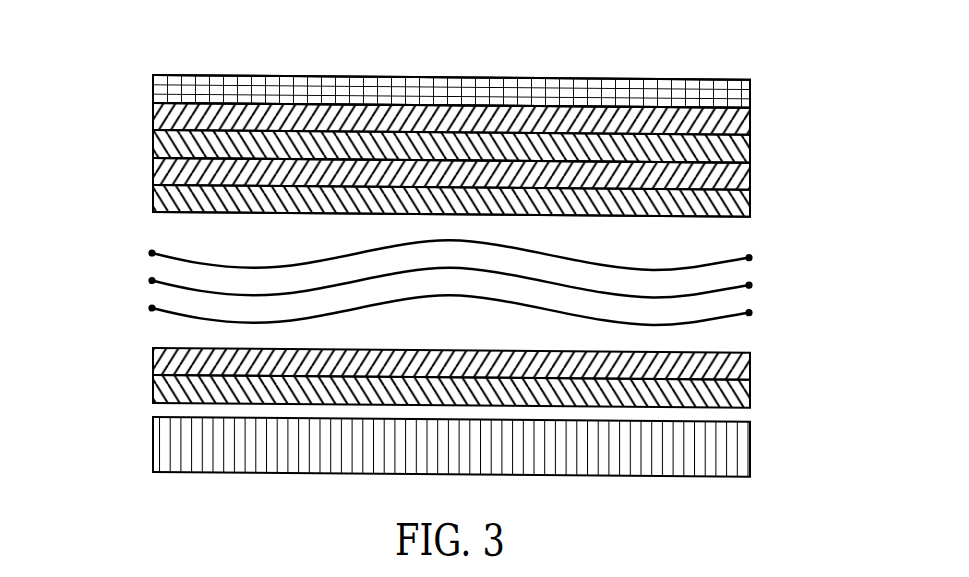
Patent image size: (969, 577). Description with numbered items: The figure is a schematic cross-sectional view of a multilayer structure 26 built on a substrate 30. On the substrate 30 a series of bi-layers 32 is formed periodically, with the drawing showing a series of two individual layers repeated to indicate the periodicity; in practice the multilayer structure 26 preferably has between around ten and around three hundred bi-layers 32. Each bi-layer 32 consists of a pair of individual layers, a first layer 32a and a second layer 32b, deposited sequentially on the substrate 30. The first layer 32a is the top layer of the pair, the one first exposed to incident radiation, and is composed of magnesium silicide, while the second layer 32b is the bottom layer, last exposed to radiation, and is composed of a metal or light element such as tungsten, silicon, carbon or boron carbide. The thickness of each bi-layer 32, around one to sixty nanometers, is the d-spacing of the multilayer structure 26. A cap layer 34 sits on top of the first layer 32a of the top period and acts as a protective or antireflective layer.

The multilayer structure 26 is at (125, 50).
The substrate 30 is at (750, 442).
The bi-layer 32 is at (140, 103).
The first layer 32a is at (750, 115).
The second layer 32b is at (750, 143).
The cap layer 34 is at (750, 88).